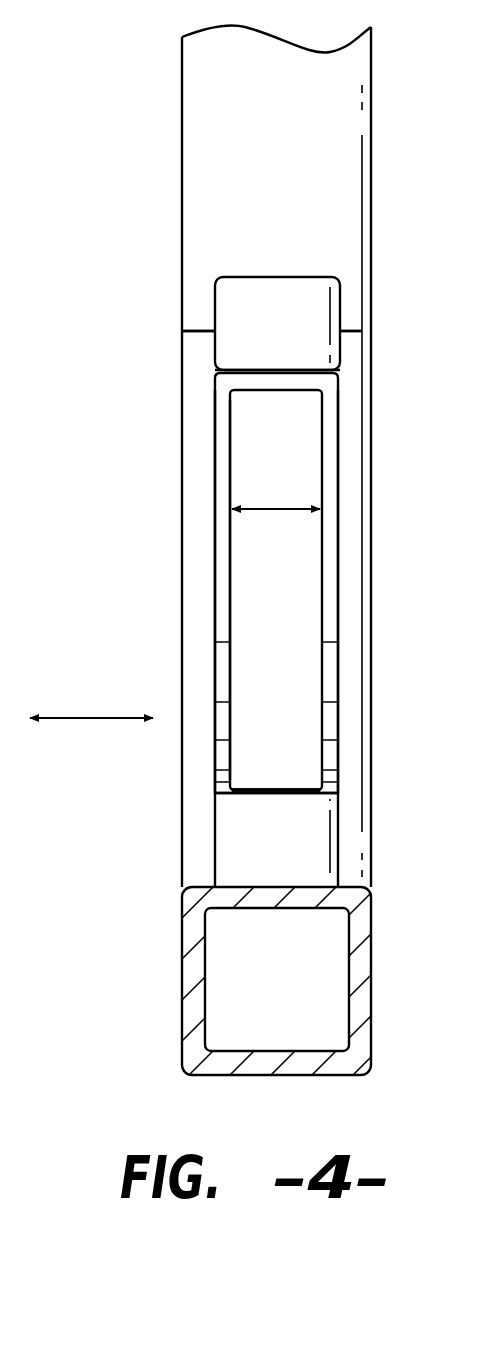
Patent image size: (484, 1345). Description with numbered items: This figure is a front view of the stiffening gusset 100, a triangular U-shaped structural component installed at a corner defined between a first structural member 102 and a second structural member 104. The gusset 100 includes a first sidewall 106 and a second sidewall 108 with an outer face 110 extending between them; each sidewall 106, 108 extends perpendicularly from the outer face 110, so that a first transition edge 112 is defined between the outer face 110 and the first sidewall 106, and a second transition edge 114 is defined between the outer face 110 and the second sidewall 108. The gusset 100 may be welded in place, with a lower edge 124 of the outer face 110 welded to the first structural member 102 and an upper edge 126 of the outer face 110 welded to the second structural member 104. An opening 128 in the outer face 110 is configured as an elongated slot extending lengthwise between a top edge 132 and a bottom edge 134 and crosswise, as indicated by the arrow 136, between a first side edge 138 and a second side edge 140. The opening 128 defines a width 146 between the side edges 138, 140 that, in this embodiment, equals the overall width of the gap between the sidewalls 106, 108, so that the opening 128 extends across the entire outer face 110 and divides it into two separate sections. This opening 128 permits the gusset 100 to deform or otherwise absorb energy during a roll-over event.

The stiffening gusset 100 is at (145, 163).
The first structural member 102 is at (198, 87).
The second structural member 104 is at (182, 985).
The first sidewall 106 is at (213, 607).
The second sidewall 108 is at (340, 608).
The outer face 110 is at (290, 310).
The first transition edge 112 is at (213, 331).
The second transition edge 114 is at (345, 331).
The lower edge 124 is at (310, 888).
The upper edge 126 is at (243, 277).
The opening 128 is at (294, 640).
The top edge 132 is at (257, 393).
The bottom edge 134 is at (257, 787).
The arrow 136 is at (82, 718).
The first side edge 138 is at (223, 547).
The second side edge 140 is at (332, 547).
The width 146 is at (266, 502).